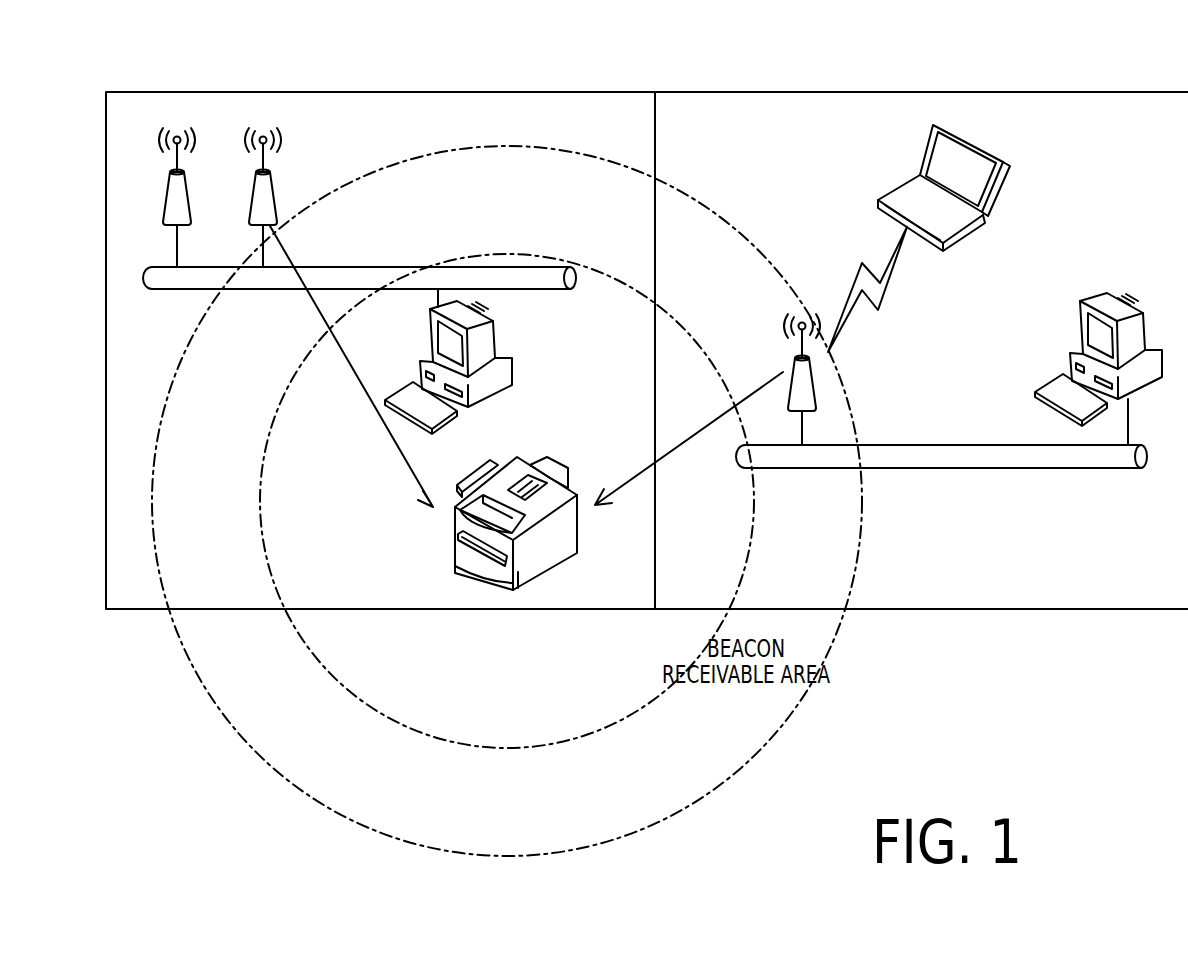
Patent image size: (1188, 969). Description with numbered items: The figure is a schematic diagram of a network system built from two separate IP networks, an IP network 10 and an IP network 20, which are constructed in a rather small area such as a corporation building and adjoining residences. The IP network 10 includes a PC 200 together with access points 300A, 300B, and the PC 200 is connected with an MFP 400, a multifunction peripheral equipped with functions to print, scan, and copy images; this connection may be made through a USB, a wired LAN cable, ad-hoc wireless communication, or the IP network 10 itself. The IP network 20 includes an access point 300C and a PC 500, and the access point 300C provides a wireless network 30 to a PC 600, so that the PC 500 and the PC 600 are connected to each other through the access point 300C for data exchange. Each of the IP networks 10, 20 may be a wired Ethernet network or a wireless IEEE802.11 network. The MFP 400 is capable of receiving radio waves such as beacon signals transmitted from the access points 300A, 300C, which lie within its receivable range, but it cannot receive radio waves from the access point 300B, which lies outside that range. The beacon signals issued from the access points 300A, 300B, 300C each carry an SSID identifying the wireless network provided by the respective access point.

The IP network 10 is at (380, 266).
The IP network 20 is at (952, 444).
The wireless network 30 is at (862, 265).
The PC 200 is at (500, 352).
The access point 300A is at (263, 120).
The access point 300B is at (177, 120).
The access point 300C is at (795, 367).
The MFP 400 is at (452, 553).
The PC 500 is at (1073, 340).
The PC 600 is at (913, 165).